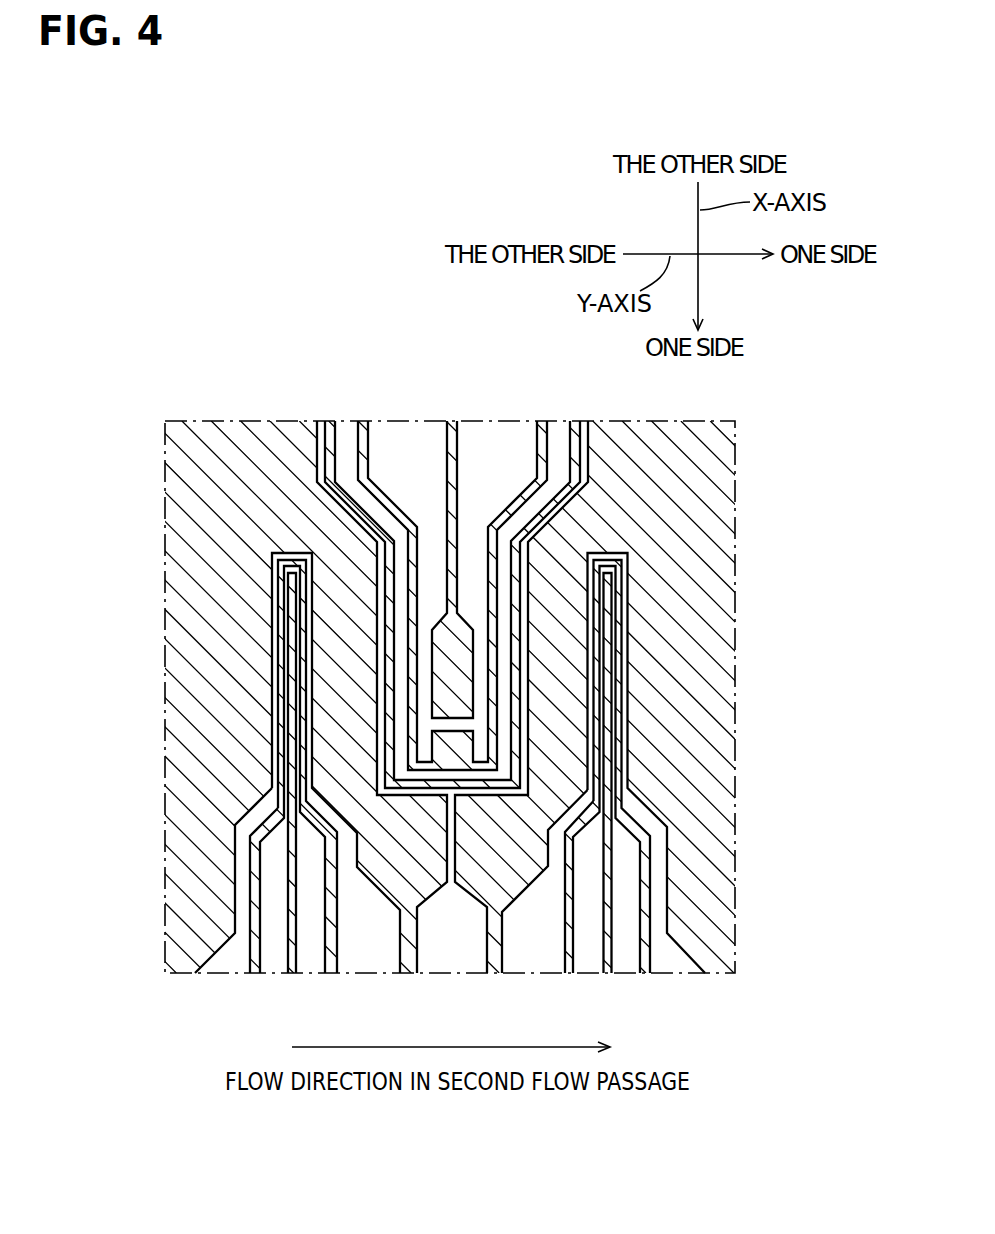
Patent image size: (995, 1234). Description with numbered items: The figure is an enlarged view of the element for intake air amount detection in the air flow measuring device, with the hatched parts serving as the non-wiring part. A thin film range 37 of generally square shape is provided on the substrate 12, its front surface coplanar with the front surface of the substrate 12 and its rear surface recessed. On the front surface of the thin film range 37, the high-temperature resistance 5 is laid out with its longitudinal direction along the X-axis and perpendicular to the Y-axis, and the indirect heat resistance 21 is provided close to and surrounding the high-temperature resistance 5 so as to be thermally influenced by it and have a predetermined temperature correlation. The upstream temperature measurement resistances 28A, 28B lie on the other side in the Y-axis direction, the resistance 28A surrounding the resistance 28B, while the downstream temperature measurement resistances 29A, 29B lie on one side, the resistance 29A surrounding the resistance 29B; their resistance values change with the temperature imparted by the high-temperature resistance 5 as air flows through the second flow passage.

The thin film range 37 is at (497, 637).
The substrate 12 is at (249, 419).
The upstream temperature measurement resistance 28A is at (298, 552).
The upstream temperature measurement resistance 28B is at (290, 596).
The downstream temperature measurement resistance 29A is at (606, 552).
The downstream temperature measurement resistance 29B is at (615, 589).
The high-temperature resistance 5 is at (478, 695).
The indirect heat resistance 21 is at (505, 748).